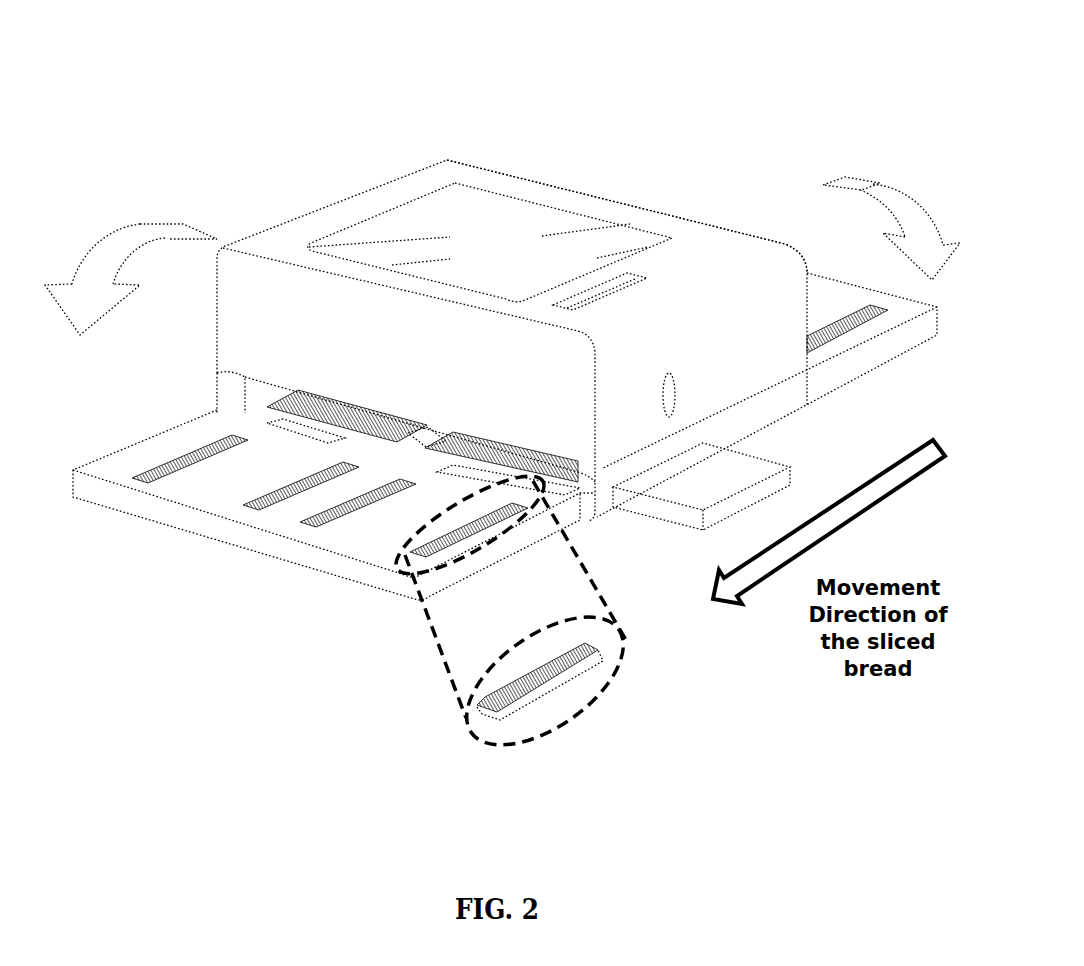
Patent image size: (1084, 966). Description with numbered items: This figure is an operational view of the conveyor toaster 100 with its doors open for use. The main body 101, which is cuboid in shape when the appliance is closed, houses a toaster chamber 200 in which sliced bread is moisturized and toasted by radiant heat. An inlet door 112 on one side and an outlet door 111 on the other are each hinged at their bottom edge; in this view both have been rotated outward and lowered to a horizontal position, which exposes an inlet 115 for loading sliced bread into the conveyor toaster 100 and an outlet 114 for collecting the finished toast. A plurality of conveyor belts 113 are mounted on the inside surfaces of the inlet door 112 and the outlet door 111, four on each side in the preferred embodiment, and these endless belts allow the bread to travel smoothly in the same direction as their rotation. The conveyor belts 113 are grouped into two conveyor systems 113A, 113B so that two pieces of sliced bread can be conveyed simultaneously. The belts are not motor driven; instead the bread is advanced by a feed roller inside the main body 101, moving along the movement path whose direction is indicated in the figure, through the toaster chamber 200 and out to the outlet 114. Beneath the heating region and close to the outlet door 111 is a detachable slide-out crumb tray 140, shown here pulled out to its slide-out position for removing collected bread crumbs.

The conveyor toaster 100 is at (283, 148).
The main body 101 is at (549, 183).
The outlet door 111 is at (438, 605).
The inlet door 112 is at (822, 272).
The conveyor belts 113 is at (614, 652).
The conveyor system 113A is at (85, 533).
The conveyor system 113B is at (268, 590).
The outlet 114 is at (212, 400).
The inlet 115 is at (822, 375).
The crumb tray 140 is at (682, 540).
The toaster chamber 200 is at (257, 408).